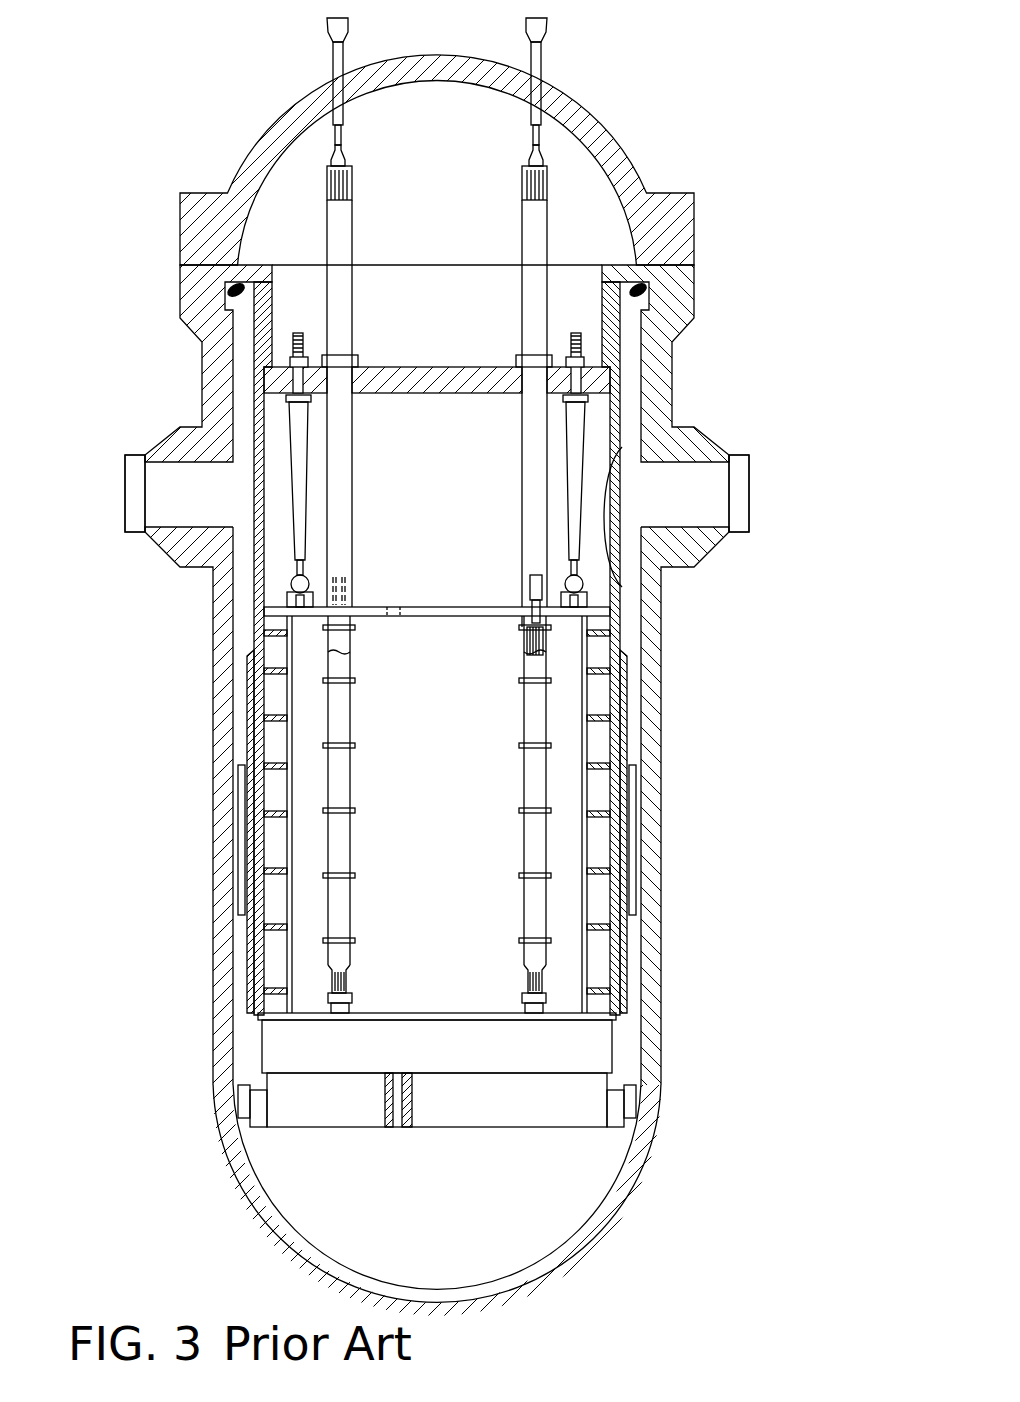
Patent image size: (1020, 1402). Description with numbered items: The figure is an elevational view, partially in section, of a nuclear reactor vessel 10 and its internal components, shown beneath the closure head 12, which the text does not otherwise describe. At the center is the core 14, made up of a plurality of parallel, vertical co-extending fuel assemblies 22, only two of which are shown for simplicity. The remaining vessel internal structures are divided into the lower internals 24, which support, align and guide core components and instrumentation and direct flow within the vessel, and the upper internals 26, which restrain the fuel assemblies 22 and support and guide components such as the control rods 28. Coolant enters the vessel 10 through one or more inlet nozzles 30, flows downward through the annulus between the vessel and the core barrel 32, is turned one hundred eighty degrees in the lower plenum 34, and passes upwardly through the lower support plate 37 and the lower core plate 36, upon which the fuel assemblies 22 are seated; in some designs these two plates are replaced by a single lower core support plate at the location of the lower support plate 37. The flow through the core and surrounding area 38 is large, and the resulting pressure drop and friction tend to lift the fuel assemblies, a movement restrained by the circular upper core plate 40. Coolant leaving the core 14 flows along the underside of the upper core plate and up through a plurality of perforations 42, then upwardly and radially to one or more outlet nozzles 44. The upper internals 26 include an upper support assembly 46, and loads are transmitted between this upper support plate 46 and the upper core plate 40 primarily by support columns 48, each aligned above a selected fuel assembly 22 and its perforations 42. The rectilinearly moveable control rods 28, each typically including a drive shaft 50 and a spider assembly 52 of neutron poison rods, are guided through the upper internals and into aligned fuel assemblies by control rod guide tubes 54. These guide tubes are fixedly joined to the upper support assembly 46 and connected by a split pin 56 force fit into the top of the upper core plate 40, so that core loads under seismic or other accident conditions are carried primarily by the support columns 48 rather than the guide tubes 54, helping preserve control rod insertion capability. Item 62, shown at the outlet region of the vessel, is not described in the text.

The vessel 10 is at (662, 687).
The closure head 12 is at (692, 234).
The core 14 is at (461, 811).
The fuel assemblies 22 is at (352, 717).
The lower internals 24 is at (461, 1061).
The upper internals 26 is at (462, 474).
The control rods 28 is at (520, 617).
The inlet nozzles 30 is at (163, 441).
The core barrel 32 is at (253, 603).
The lower plenum 34 is at (605, 1180).
The lower core plate 36 is at (502, 1013).
The lower support plate 37 is at (480, 1113).
The surrounding area 38 is at (607, 742).
The upper core plate 40 is at (477, 616).
The perforations 42 is at (397, 607).
The outlet nozzles 44 is at (713, 447).
The upper support assembly 46 is at (610, 266).
The support columns 48 is at (307, 493).
The drive shaft 50 is at (530, 582).
The spider assembly 52 is at (528, 603).
The control rod guide tubes 54 is at (347, 440).
The split pin 56 is at (548, 620).
The outlet nozzle extension 62 is at (636, 572).